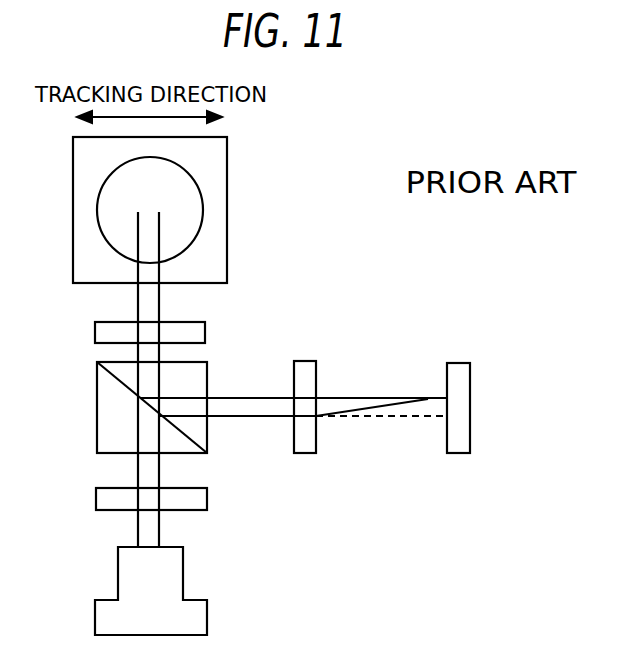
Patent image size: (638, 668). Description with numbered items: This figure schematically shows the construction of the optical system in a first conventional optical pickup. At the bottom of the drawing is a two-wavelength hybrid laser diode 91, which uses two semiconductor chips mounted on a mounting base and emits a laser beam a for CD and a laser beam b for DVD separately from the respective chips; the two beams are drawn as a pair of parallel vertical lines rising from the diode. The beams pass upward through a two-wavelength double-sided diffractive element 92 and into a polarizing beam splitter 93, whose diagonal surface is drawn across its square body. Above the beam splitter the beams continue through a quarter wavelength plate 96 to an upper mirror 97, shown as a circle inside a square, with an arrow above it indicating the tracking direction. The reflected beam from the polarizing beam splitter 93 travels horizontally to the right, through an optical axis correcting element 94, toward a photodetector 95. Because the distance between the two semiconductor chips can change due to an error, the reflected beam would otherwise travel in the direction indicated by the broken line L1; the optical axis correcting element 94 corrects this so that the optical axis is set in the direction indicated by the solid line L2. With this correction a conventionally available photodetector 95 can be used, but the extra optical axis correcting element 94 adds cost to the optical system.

The two-wavelength hybrid laser diode 91 is at (207, 612).
The two-wavelength double-sided diffractive element 92 is at (207, 497).
The polarizing beam splitter 93 is at (97, 430).
The optical axis correcting element 94 is at (316, 447).
The photodetector 95 is at (470, 432).
The quarter wavelength plate 96 is at (205, 330).
The upper mirror 97 is at (227, 158).
The laser beam for CD a is at (137, 528).
The laser beam for DVD b is at (160, 528).
The broken line L1 is at (416, 421).
The solid line L2 is at (350, 409).